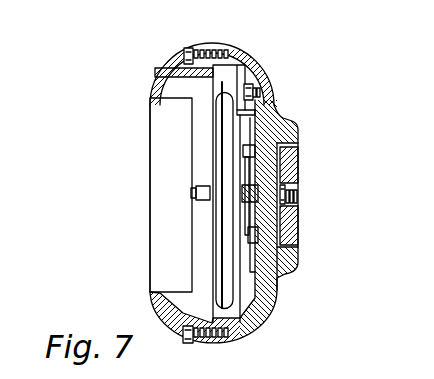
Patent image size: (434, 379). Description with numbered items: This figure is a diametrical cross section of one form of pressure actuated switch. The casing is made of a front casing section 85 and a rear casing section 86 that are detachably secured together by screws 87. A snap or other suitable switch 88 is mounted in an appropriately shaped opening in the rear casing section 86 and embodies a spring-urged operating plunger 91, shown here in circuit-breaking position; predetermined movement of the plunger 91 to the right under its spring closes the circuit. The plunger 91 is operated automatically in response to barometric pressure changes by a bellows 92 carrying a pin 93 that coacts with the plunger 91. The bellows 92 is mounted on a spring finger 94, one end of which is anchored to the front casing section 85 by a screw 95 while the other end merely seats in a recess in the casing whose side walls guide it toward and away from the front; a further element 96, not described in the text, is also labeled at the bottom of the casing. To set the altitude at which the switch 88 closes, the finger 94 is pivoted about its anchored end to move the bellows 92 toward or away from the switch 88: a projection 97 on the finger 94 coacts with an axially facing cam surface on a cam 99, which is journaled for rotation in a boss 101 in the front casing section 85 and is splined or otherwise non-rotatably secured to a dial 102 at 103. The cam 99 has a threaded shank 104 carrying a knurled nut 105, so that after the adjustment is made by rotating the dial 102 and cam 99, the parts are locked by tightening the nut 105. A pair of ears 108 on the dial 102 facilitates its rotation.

The front casing section 85 is at (256, 65).
The rear casing section 86 is at (152, 82).
The screws 87 is at (190, 48).
The switch 88 is at (162, 250).
The operating plunger 91 is at (195, 192).
The bellows 92 is at (213, 262).
The pin 93 is at (198, 200).
The spring finger 94 is at (244, 104).
The screw 95 is at (258, 92).
The screw 96 is at (258, 326).
The projection 97 is at (245, 147).
The cam 99 is at (250, 243).
The boss 101 is at (297, 208).
The dial 102 is at (298, 146).
The splined connection 103 is at (297, 187).
The threaded shank 104 is at (296, 200).
The knurled nut 105 is at (298, 168).
The ears 108 is at (292, 270).